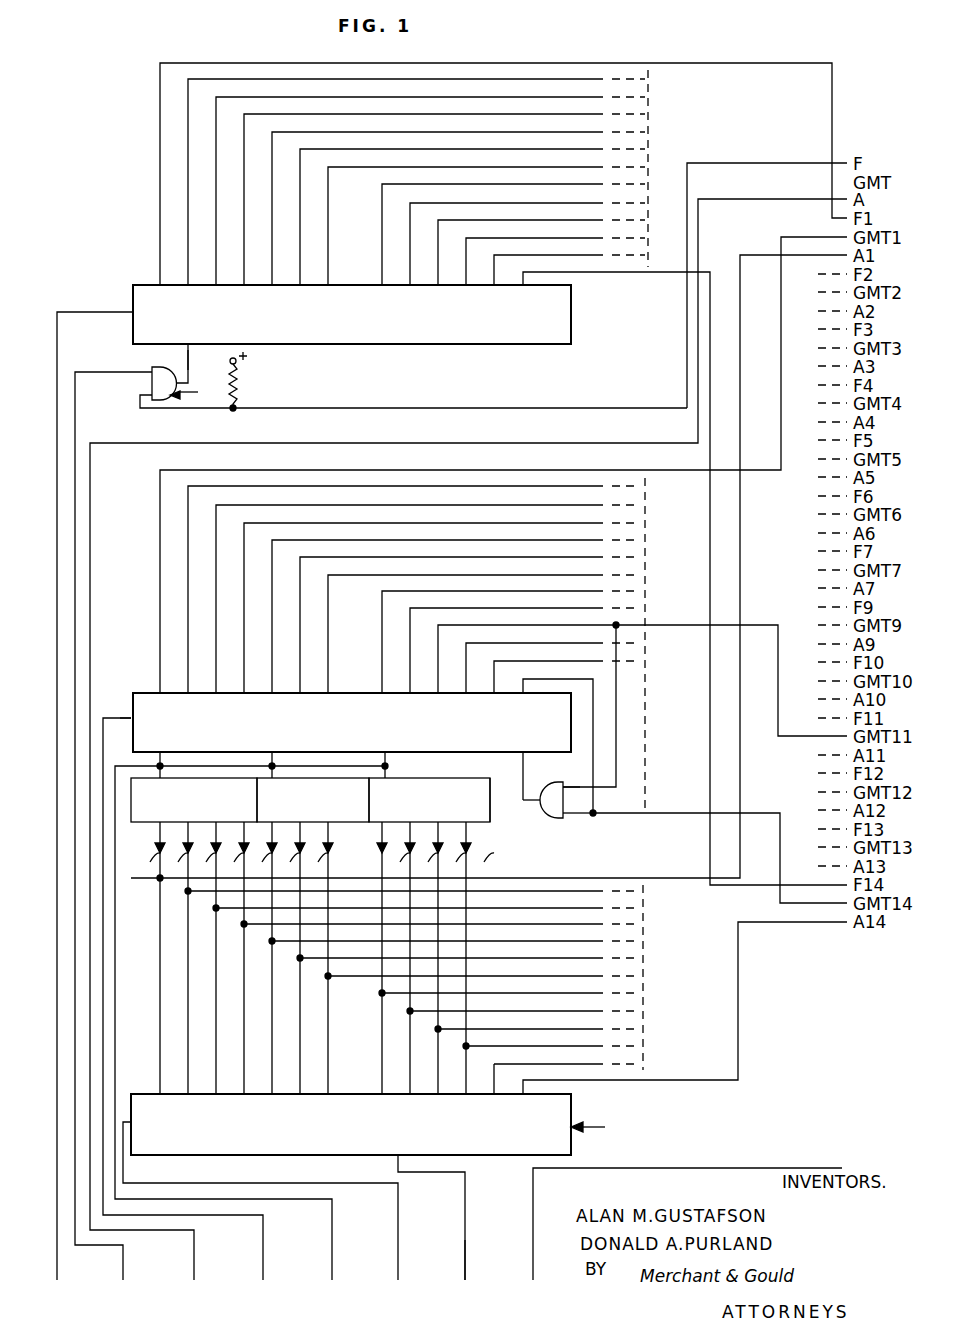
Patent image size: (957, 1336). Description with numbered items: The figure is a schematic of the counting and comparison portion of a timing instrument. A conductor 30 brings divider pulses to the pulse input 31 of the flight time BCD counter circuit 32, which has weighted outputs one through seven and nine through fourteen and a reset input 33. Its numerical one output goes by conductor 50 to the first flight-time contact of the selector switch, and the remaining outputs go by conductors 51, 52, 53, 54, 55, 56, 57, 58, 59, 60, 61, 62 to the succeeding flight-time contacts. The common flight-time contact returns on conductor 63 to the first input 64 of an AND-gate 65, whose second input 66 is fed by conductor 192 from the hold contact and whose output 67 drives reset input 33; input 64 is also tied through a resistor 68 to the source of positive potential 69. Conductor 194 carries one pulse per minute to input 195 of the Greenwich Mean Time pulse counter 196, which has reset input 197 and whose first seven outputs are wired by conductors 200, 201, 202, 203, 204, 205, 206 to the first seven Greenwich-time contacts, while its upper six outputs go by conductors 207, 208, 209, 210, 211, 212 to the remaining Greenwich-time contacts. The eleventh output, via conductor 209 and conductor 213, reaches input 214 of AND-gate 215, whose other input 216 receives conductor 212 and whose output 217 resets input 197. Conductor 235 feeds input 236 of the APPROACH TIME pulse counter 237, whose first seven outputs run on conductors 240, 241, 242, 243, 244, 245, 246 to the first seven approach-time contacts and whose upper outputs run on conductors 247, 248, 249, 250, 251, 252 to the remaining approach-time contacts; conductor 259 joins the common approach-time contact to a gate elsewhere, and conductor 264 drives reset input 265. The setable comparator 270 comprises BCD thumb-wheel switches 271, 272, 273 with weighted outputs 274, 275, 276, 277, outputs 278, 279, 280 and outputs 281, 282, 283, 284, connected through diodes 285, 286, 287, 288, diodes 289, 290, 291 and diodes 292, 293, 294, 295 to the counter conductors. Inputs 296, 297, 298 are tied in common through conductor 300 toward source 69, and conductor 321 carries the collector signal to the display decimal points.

The conductor 30 is at (70, 312).
The pulse input 31 is at (133, 312).
The flight time BCD counter circuit 32 is at (385, 345).
The reset input 33 is at (193, 352).
The conductor 50 is at (160, 103).
The conductor 51 is at (188, 163).
The conductor 52 is at (216, 172).
The conductor 53 is at (244, 182).
The conductor 54 is at (272, 198).
The conductor 55 is at (300, 213).
The conductor 56 is at (329, 212).
The conductor 57 is at (382, 222).
The conductor 58 is at (410, 262).
The conductor 59 is at (438, 270).
The conductor 60 is at (466, 276).
The conductor 61 is at (496, 283).
The conductor 62 is at (530, 282).
The conductor 63 is at (742, 163).
The first input 64 is at (150, 395).
The AND-gate 65 is at (196, 390).
The second input 66 is at (150, 371).
The output 67 is at (186, 346).
The resistor 68 is at (240, 393).
The source of positive potential 69 is at (240, 368).
The conductor 192 is at (78, 372).
The conductor 194 is at (100, 718).
The input 195 is at (131, 716).
The Greenwich Mean Time pulse counter 196 is at (350, 692).
The reset input 197 is at (524, 753).
The conductor 200 is at (160, 500).
The conductor 201 is at (188, 538).
The conductor 202 is at (216, 512).
The conductor 203 is at (244, 528).
The conductor 204 is at (272, 546).
The conductor 205 is at (300, 562).
The conductor 206 is at (328, 580).
The conductor 207 is at (382, 598).
The conductor 208 is at (410, 615).
The conductor 209 is at (438, 632).
The conductor 210 is at (466, 650).
The conductor 211 is at (494, 668).
The conductor 212 is at (523, 686).
The conductor 213 is at (616, 762).
The input 214 is at (578, 776).
The AND-gate 215 is at (566, 820).
The input 216 is at (579, 806).
The output 217 is at (540, 802).
The conductor 235 is at (398, 1238).
The input 236 is at (130, 1120).
The APPROACH TIME pulse counter 237 is at (605, 1128).
The conductor 240 is at (160, 948).
The conductor 241 is at (188, 978).
The conductor 242 is at (216, 993).
The conductor 243 is at (244, 1008).
The conductor 244 is at (272, 1023).
The conductor 245 is at (300, 1038).
The conductor 246 is at (328, 1051).
The conductor 247 is at (382, 1052).
The conductor 248 is at (410, 1070).
The conductor 249 is at (438, 1078).
The conductor 250 is at (466, 1078).
The conductor 251 is at (586, 1064).
The conductor 252 is at (625, 1082).
The conductor 259 is at (303, 443).
The conductor 264 is at (465, 1238).
The reset input 265 is at (392, 1160).
The setable comparator 270 is at (500, 772).
The BCD thumb-wheel switch 271 is at (146, 822).
The BCD thumb-wheel switch 272 is at (332, 850).
The BCD thumb-wheel switch 273 is at (412, 792).
The weighted output 274 is at (174, 841).
The weighted output 275 is at (202, 841).
The weighted output 276 is at (230, 841).
The weighted output 277 is at (258, 841).
The weighted output 278 is at (286, 841).
The weighted output 279 is at (314, 841).
The weighted output 280 is at (342, 841).
The weighted output 281 is at (396, 841).
The weighted output 282 is at (424, 841).
The weighted output 283 is at (452, 841).
The weighted output 284 is at (480, 841).
The diode 285 is at (139, 863).
The diode 286 is at (178, 863).
The diode 287 is at (206, 863).
The diode 288 is at (234, 863).
The diode 289 is at (262, 863).
The diode 290 is at (290, 863).
The diode 291 is at (318, 863).
The diode 292 is at (400, 863).
The diode 293 is at (428, 863).
The diode 294 is at (456, 863).
The diode 295 is at (484, 863).
The input 296 is at (162, 768).
The input 297 is at (274, 768).
The input 298 is at (386, 767).
The conductor 300 is at (116, 935).
The conductor 321 is at (833, 1166).